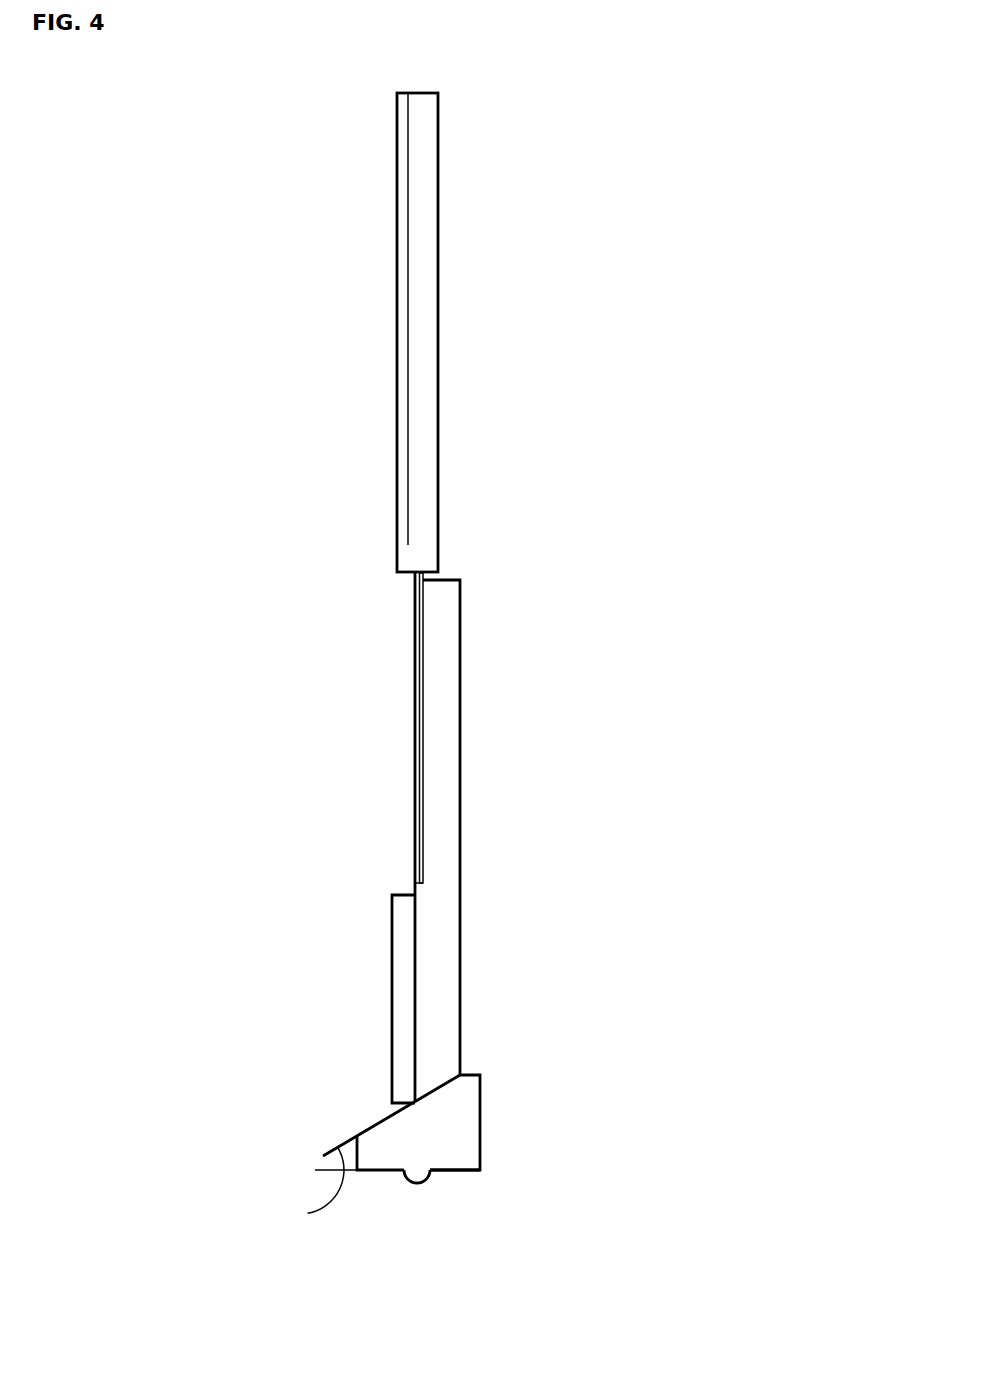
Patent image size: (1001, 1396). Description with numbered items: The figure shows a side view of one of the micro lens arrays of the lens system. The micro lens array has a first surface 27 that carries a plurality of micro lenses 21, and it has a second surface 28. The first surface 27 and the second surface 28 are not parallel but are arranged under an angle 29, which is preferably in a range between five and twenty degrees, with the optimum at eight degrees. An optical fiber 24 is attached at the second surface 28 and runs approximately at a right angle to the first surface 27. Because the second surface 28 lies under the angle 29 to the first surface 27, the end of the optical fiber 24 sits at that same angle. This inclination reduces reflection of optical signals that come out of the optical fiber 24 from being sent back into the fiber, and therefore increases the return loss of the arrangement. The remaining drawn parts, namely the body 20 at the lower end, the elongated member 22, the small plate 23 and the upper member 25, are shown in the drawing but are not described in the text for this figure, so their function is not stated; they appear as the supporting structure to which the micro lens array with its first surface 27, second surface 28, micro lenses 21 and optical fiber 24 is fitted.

The wedge block 20 is at (481, 1122).
The micro lenses 21 is at (345, 1234).
The support bar 22 is at (542, 837).
The side plate 23 is at (282, 900).
The optical fiber 24 is at (325, 697).
The upper rod 25 is at (598, 332).
The first surface 27 is at (512, 1234).
The second surface 28 is at (292, 965).
The angle 29 is at (318, 1143).